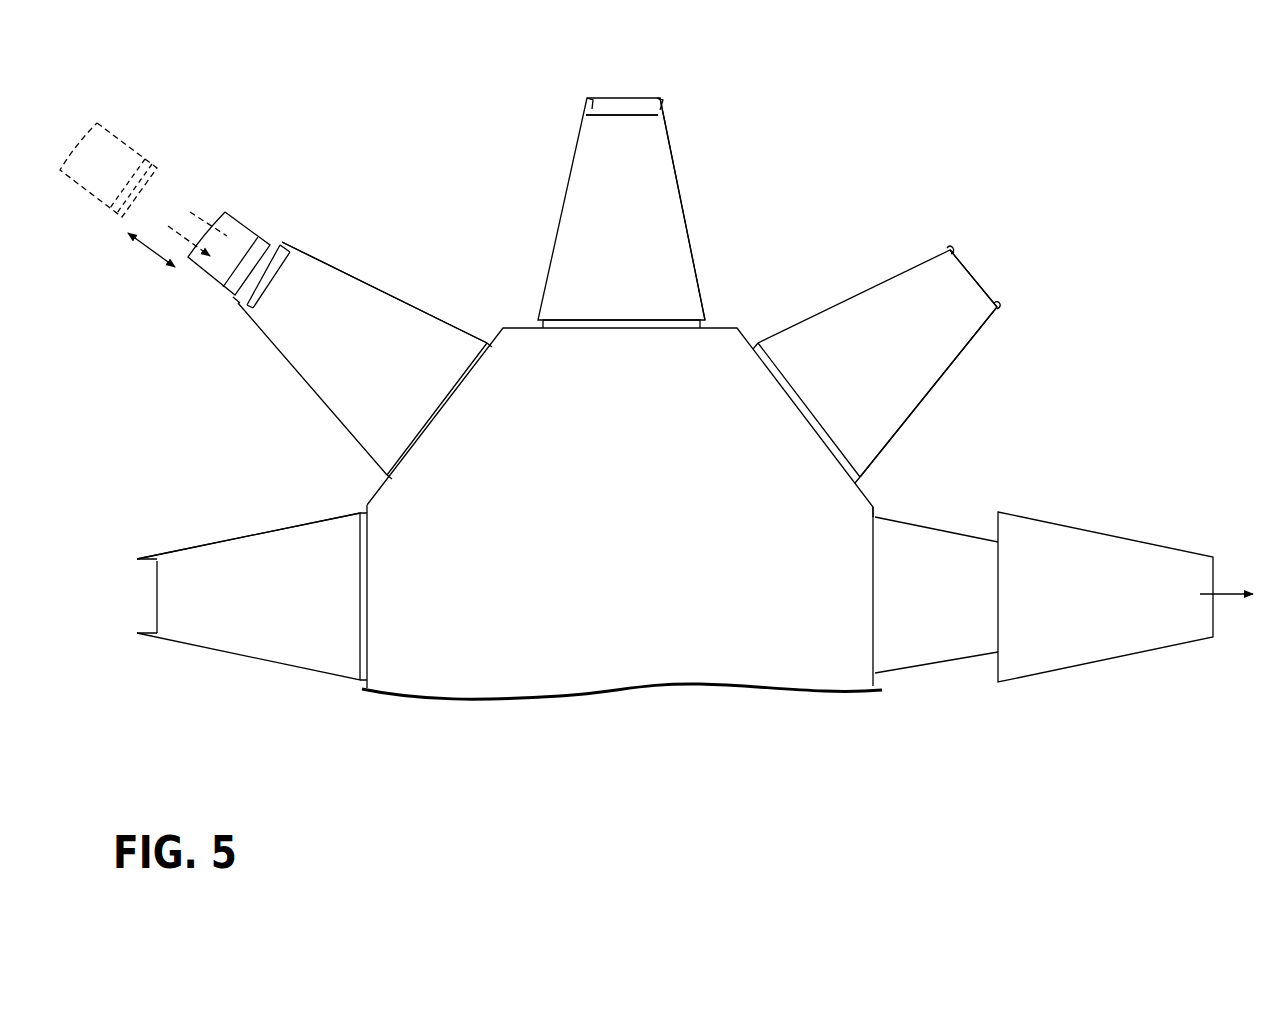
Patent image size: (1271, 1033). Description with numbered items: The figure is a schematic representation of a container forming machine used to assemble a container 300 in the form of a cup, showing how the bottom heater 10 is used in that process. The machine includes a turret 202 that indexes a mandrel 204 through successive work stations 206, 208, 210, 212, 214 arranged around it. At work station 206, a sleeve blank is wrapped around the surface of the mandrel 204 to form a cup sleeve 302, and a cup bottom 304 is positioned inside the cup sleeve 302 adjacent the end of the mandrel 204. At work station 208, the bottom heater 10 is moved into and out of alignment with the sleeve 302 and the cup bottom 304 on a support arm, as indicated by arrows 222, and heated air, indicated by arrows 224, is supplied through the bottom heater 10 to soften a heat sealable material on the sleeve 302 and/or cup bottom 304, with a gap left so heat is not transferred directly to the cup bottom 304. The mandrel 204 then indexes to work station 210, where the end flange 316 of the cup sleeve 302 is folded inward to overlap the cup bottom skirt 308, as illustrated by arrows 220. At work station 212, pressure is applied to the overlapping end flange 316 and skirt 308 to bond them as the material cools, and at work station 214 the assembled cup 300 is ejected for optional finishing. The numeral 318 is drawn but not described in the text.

The bottom heater 10 is at (118, 128).
The turret 202 is at (601, 563).
The mandrel 204 is at (587, 322).
The work station 206 is at (205, 655).
The work station 208 is at (270, 343).
The work station 210 is at (560, 160).
The work station 212 is at (868, 276).
The work station 214 is at (1150, 660).
The arrows 220 is at (650, 101).
The arrows 222 is at (150, 251).
The arrows 224 is at (190, 207).
The container 300 is at (260, 615).
The cup sleeve 302 is at (373, 283).
The cup bottom 304 is at (285, 275).
The cup bottom skirt 308 is at (663, 113).
The end flange 316 is at (662, 99).
The hook 318 is at (950, 250).